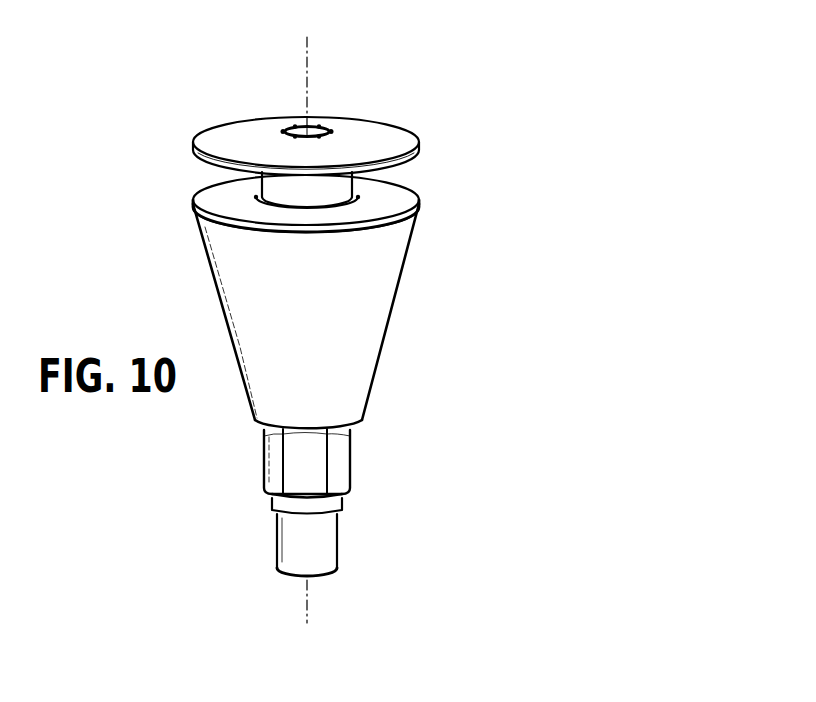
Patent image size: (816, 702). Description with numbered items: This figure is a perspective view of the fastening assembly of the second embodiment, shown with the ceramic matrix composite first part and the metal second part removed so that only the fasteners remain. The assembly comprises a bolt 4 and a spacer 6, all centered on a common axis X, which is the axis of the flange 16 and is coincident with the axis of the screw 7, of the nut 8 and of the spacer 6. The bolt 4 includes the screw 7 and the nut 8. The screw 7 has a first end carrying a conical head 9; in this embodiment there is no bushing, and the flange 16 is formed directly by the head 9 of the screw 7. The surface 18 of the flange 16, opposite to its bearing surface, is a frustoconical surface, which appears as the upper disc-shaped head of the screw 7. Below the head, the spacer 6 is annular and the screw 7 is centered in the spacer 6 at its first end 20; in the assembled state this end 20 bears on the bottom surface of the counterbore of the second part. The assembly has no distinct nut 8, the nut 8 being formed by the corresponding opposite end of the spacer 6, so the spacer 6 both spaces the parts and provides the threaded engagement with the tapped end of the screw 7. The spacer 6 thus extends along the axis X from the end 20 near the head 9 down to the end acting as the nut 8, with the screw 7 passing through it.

The bolt 4 is at (357, 478).
The spacer 6 is at (355, 316).
The screw 7 is at (320, 535).
The nut 8 is at (302, 455).
The conical head 9 is at (352, 138).
The flange 16 is at (335, 112).
The frustoconical surface 18 is at (335, 112).
The first end of the spacer 20 is at (393, 195).
The axis X is at (302, 56).